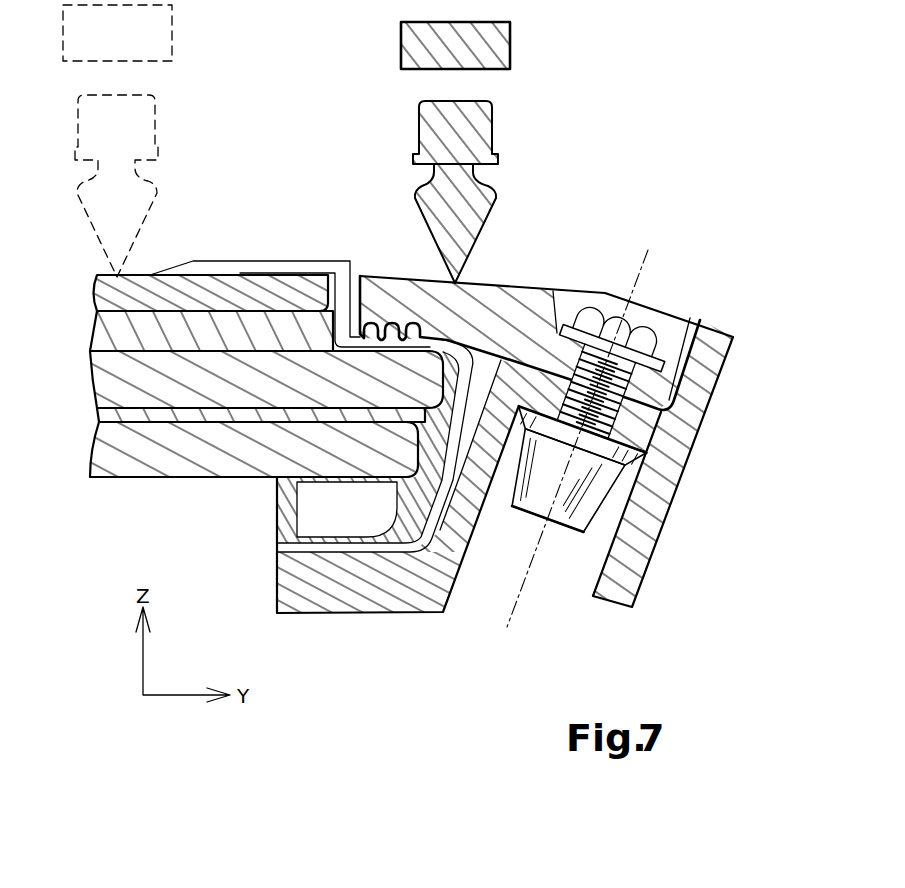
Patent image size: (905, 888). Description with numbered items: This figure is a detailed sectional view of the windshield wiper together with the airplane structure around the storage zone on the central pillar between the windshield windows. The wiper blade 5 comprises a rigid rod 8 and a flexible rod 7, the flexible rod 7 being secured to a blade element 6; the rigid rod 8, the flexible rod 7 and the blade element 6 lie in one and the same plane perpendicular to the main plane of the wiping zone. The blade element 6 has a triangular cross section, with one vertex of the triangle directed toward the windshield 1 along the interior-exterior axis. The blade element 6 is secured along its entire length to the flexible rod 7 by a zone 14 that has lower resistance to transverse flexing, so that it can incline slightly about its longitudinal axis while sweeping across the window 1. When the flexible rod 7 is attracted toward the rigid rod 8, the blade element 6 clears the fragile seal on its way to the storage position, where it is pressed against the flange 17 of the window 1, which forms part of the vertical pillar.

The windshield 1 is at (62, 275).
The wiper blade 5 is at (305, 52).
The blade element 6 is at (478, 236).
The flexible rod 7 is at (426, 124).
The rigid rod 8 is at (406, 33).
The zone of lower resistance to transverse flexing 14 is at (425, 167).
The flange 17 is at (548, 303).